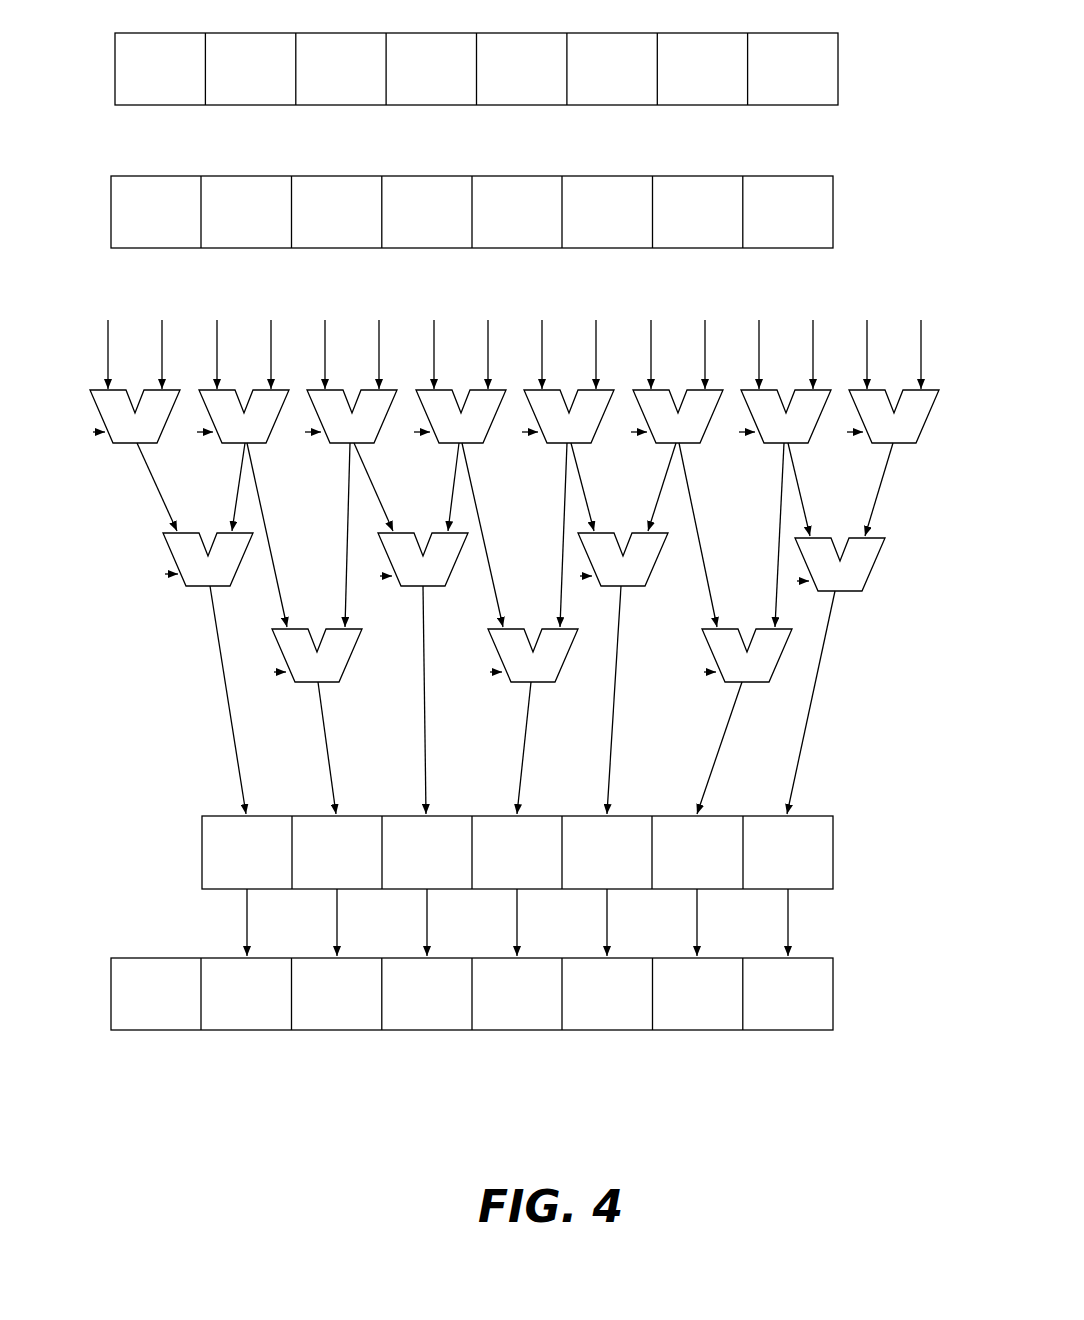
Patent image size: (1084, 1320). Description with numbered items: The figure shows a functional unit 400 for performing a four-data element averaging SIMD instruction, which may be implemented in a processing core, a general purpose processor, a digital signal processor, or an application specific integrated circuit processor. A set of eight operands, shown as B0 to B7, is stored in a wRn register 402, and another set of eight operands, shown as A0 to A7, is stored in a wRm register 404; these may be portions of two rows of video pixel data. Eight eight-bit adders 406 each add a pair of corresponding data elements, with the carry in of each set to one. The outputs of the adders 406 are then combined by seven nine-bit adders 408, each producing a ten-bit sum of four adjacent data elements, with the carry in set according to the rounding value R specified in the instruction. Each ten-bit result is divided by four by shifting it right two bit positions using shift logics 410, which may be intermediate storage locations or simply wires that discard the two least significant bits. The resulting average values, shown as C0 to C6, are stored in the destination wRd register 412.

The functional unit 400 is at (492, 587).
The wRn register 402 is at (838, 67).
The wRm register 404 is at (833, 210).
The eight-bit adders 406 is at (911, 438).
The nine-bit adders 408 is at (764, 681).
The shift logics 410 is at (833, 852).
The wRd register 412 is at (833, 993).